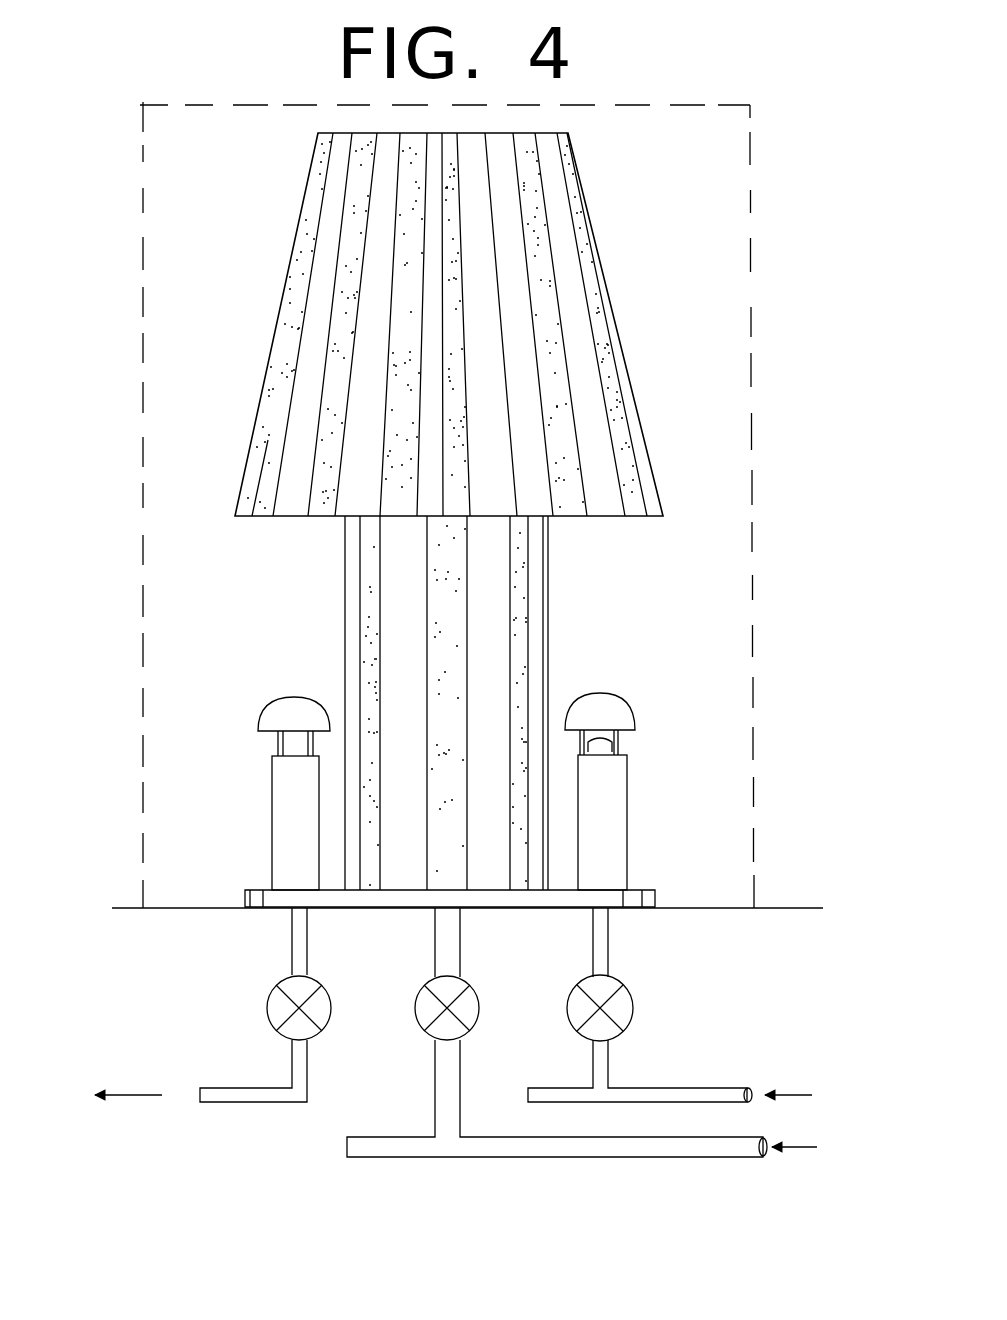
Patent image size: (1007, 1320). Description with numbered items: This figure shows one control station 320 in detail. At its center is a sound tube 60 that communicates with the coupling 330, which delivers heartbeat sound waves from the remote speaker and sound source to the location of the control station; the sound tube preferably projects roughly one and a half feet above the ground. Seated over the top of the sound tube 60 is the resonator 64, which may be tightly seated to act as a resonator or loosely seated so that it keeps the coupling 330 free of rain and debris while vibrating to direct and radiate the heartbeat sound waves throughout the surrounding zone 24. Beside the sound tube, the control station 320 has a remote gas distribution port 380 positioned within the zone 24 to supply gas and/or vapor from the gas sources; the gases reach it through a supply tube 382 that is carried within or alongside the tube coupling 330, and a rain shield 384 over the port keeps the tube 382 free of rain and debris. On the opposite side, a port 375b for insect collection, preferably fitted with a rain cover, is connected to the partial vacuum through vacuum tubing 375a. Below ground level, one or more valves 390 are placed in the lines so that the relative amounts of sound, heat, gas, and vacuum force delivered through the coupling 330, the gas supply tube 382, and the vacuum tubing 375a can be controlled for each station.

The zone 24 is at (757, 479).
The sound tube 60 is at (535, 562).
The resonator 64 is at (323, 204).
The control station 320 is at (695, 293).
The coupling 330 is at (405, 1142).
The vacuum tubing 375a is at (223, 1090).
The port 375b is at (287, 830).
The remote gas distribution port 380 is at (613, 745).
The supply tube 382 is at (610, 842).
The rain shield 384 is at (288, 712).
The valve 390 is at (415, 1000).